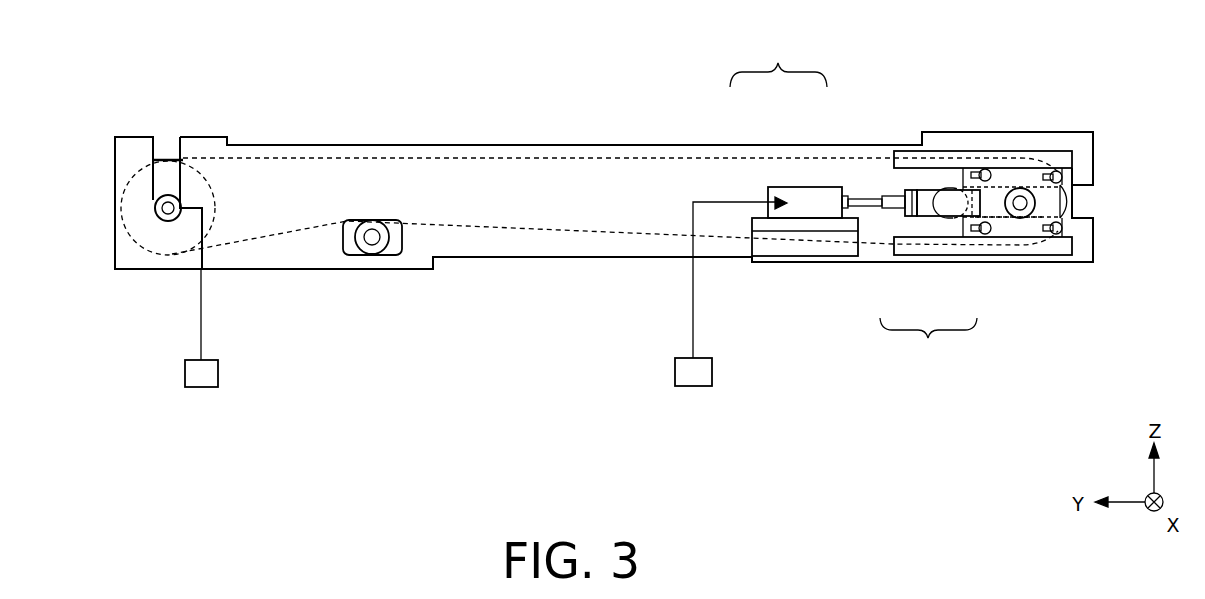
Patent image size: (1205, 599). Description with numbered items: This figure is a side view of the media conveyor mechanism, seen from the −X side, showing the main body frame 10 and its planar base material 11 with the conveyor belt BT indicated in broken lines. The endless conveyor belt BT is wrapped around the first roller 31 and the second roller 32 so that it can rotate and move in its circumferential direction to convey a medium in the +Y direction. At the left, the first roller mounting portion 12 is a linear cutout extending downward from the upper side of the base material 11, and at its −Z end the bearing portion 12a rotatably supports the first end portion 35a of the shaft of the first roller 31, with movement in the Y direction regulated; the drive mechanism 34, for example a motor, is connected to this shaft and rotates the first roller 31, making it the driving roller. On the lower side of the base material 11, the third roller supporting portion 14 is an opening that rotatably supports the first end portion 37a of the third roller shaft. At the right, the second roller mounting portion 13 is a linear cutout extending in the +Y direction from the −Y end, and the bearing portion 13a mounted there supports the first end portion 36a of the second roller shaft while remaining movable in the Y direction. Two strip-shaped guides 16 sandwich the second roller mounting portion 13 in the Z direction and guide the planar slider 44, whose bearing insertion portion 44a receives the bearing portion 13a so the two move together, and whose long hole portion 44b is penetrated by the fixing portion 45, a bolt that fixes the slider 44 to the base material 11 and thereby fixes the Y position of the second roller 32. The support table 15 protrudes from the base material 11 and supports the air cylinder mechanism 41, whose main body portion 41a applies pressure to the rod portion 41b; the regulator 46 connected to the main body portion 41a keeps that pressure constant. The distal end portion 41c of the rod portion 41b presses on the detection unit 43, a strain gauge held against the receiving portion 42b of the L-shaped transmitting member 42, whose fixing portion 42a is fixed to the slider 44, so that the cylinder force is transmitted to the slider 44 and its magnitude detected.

The main body frame 10 is at (539, 259).
The base material 11 is at (615, 245).
The first roller mounting portion 12 is at (180, 150).
The bearing portion 12a is at (183, 207).
The second roller mounting portion 13 is at (1085, 190).
The bearing portion 13a is at (1018, 188).
The third roller supporting portion 14 is at (393, 254).
The support table 15 is at (808, 248).
The guides 16 is at (940, 162).
The first roller 31 is at (200, 195).
The second roller 32 is at (1065, 200).
The drive mechanism 34 is at (202, 387).
The first end portion 35a is at (168, 212).
The first end portion 36a is at (1021, 206).
The first end portion 37a is at (372, 240).
The air cylinder mechanism 41 is at (778, 63).
The main body portion 41a is at (810, 197).
The rod portion 41b is at (865, 200).
The distal end portion 41c is at (890, 197).
The transmitting member 42 is at (928, 343).
The fixing portion 42a is at (953, 214).
The receiving portion 42b is at (917, 217).
The detection unit 43 is at (912, 210).
The slider 44 is at (1068, 208).
The bearing insertion portion 44a is at (1010, 217).
The long hole portion 44b is at (1050, 176).
The fixing portion 45 is at (984, 174).
The regulator 46 is at (693, 386).
The conveyor belt BT is at (452, 224).